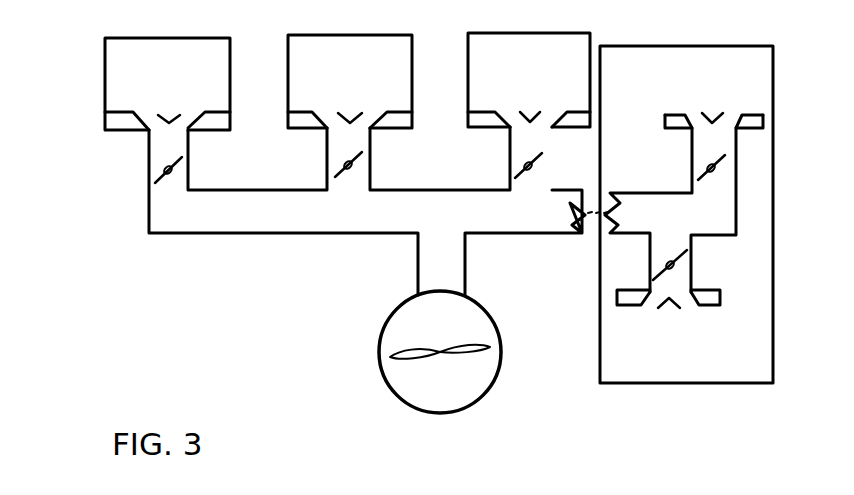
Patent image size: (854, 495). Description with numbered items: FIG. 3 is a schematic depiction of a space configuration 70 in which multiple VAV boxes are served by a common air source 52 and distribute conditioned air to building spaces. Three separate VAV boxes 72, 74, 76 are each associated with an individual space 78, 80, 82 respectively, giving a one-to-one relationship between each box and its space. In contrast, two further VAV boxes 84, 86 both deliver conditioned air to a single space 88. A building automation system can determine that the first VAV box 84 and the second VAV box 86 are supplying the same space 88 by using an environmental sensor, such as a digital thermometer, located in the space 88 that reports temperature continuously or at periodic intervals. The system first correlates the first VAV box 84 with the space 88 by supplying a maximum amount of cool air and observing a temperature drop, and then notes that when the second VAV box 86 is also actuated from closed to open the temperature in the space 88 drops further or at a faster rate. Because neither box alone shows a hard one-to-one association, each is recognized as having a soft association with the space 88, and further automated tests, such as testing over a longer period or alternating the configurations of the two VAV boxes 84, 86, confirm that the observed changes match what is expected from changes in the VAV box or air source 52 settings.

The space configuration 70 is at (153, 318).
The air source 52 is at (379, 352).
The VAV box 72 is at (149, 172).
The VAV box 74 is at (327, 165).
The VAV box 76 is at (510, 163).
The individual space 78 is at (167, 84).
The individual space 80 is at (350, 81).
The individual space 82 is at (529, 80).
The first VAV box 84 is at (692, 163).
The second VAV box 86 is at (691, 262).
The single space 88 is at (686, 214).